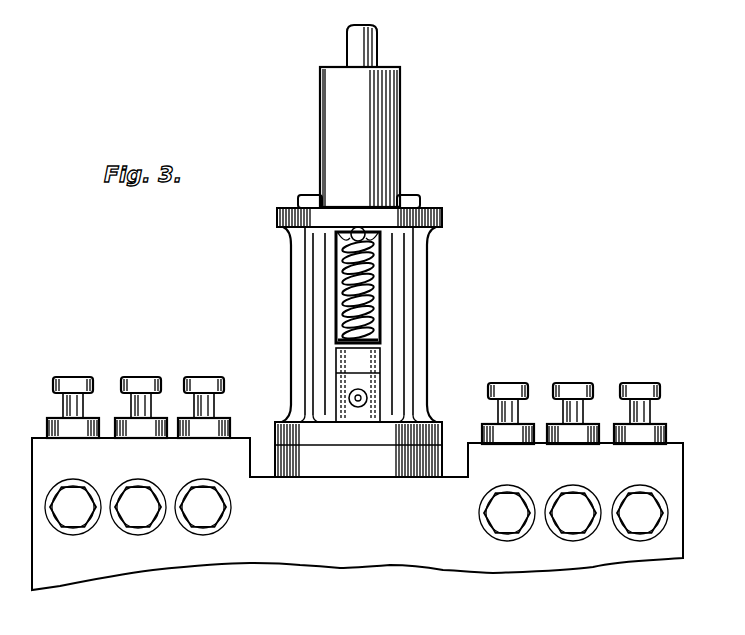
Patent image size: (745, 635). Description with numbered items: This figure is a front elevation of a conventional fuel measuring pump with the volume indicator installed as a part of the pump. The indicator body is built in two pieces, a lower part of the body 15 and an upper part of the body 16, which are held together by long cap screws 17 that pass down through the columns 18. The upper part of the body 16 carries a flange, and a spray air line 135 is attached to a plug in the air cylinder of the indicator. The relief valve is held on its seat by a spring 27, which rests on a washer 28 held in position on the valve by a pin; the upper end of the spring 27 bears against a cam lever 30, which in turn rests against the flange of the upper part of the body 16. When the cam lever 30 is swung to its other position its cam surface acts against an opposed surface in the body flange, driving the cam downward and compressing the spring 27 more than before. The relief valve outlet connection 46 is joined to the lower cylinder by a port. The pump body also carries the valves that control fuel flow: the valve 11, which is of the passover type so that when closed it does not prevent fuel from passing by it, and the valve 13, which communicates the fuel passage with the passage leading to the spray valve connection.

The spray air line 135 is at (362, 40).
The cam lever 30 is at (365, 226).
The long cap screws 17 is at (403, 197).
The spring 27 is at (377, 313).
The washer 28 is at (382, 337).
The columns 18 is at (415, 333).
The relief valve outlet connection 46 is at (362, 396).
The upper part of the body 16 is at (430, 420).
The lower part of the body 15 is at (438, 423).
The valve 11 is at (187, 377).
The valve 13 is at (87, 512).